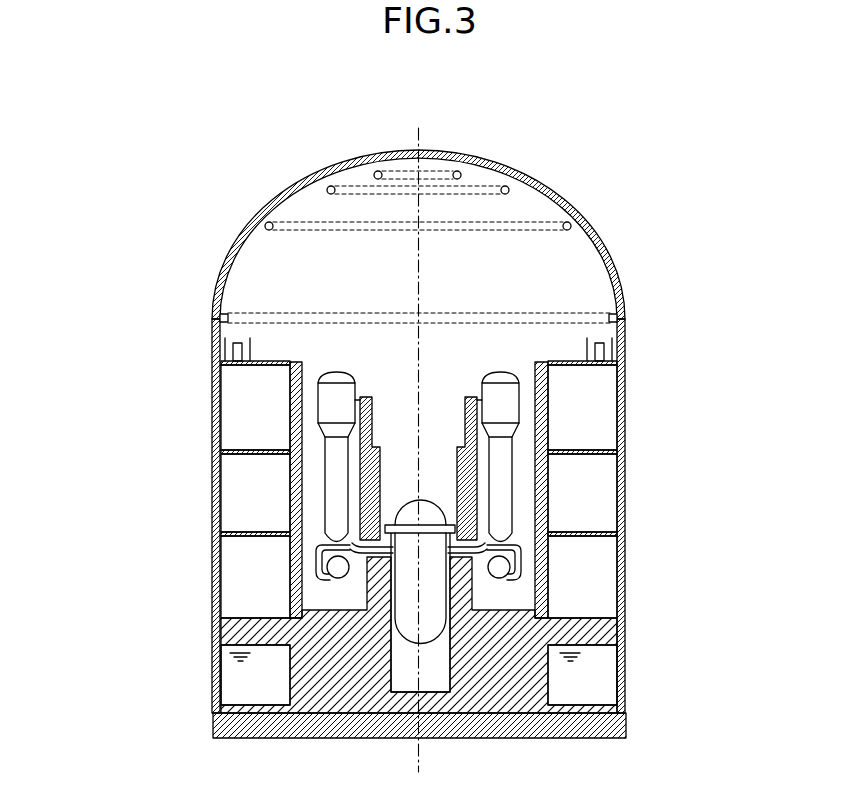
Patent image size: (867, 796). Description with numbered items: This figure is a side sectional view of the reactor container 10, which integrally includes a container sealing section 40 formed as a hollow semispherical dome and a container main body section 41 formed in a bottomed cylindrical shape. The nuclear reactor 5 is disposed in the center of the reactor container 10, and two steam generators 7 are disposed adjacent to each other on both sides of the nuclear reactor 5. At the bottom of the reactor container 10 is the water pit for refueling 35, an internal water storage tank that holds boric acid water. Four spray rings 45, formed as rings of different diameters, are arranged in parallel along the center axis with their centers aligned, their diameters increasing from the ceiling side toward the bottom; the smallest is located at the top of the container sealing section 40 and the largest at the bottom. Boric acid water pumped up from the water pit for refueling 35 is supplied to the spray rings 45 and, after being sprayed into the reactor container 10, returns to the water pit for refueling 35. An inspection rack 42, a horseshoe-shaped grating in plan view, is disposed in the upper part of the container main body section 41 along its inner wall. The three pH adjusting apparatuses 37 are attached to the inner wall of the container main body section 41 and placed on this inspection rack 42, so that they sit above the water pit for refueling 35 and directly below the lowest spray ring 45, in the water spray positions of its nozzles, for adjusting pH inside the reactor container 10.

The reactor container 10 is at (450, 397).
The container sealing section 40 is at (567, 197).
The container main body section 41 is at (626, 466).
The spray ring 45 is at (402, 170).
The pH adjusting apparatus 37 is at (640, 252).
The inspection rack 42 is at (660, 366).
The steam generator 7 is at (500, 365).
The nuclear reactor 5 is at (432, 499).
The water pit for refueling 35 is at (235, 683).